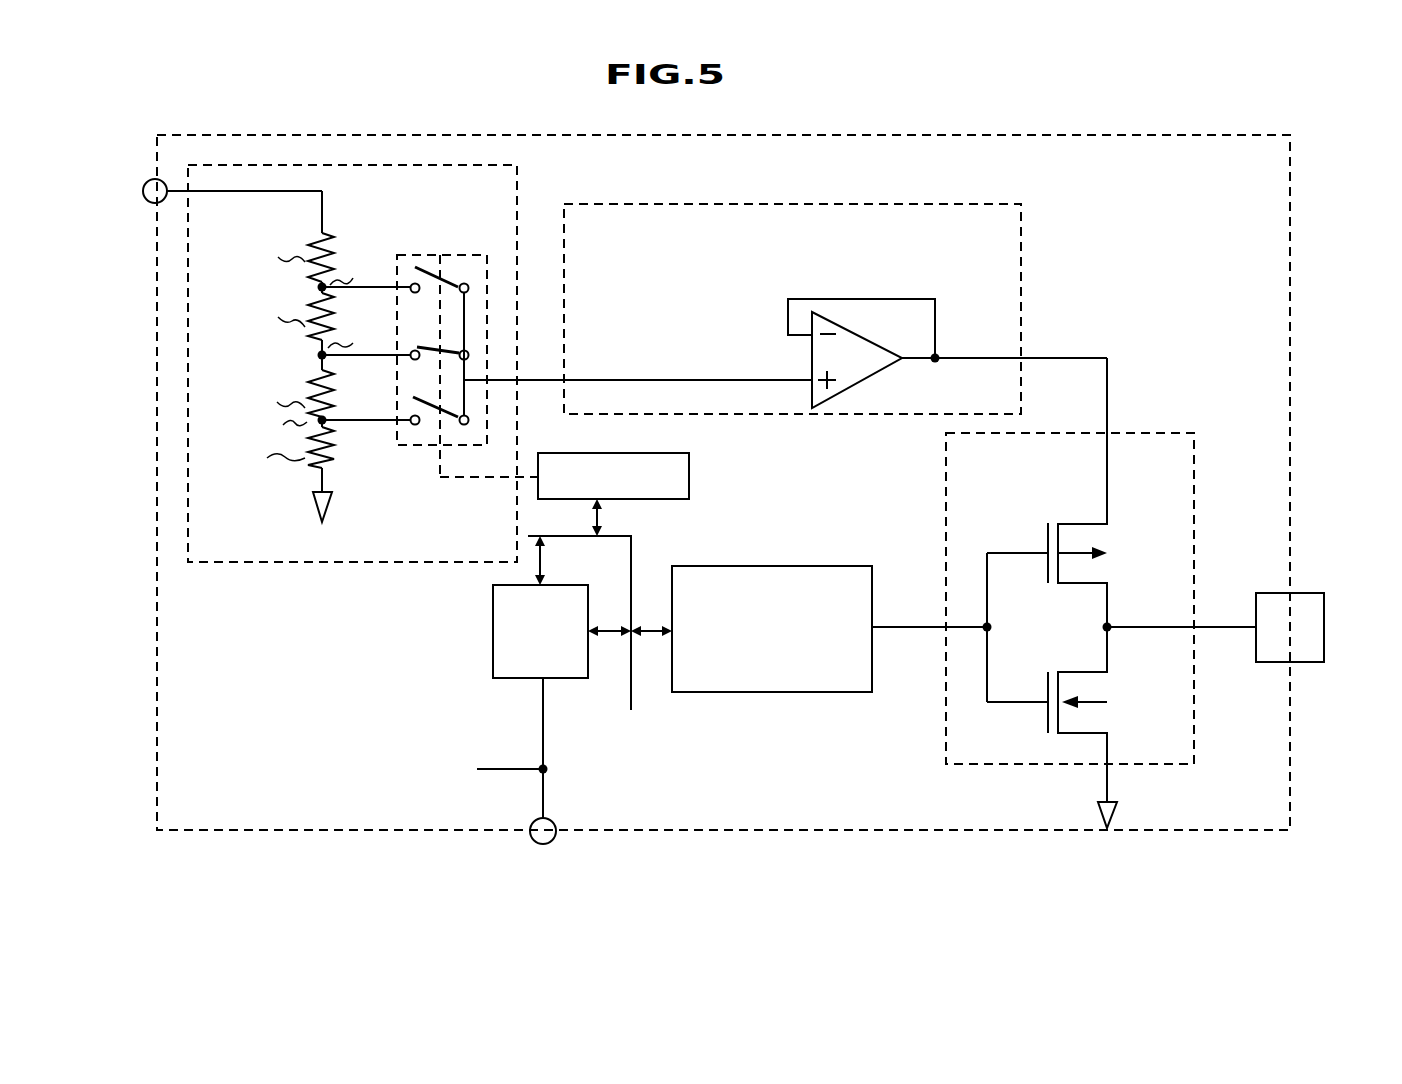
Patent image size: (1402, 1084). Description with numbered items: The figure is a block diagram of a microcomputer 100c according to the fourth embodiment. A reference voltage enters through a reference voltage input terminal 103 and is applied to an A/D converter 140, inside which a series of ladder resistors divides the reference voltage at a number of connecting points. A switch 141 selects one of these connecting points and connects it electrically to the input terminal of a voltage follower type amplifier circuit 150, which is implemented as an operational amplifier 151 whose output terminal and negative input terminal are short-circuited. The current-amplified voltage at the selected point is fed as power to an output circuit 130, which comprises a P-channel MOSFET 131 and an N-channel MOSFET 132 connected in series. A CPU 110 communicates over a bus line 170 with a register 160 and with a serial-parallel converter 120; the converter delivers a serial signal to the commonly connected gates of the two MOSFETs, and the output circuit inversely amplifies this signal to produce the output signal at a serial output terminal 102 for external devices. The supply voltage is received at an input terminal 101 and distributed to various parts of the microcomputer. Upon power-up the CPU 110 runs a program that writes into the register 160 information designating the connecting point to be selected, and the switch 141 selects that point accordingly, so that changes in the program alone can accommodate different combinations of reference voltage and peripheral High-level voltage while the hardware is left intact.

The microcomputer 100c is at (1290, 417).
The input terminal 101 is at (543, 845).
The serial output terminal 102 is at (1324, 618).
The reference voltage input terminal 103 is at (143, 190).
The CPU 110 is at (493, 628).
The serial-parallel converter 120 is at (853, 566).
The output circuit 130 is at (1166, 433).
The P-channel MOSFET 131 is at (1107, 532).
The N-channel MOSFET 132 is at (1102, 692).
The A/D converter 140 is at (517, 190).
The switch 141 is at (413, 448).
The voltage follower type amplifier circuit 150 is at (1022, 293).
The operational amplifier 151 is at (877, 370).
The register 160 is at (690, 470).
The bus line 170 is at (631, 550).